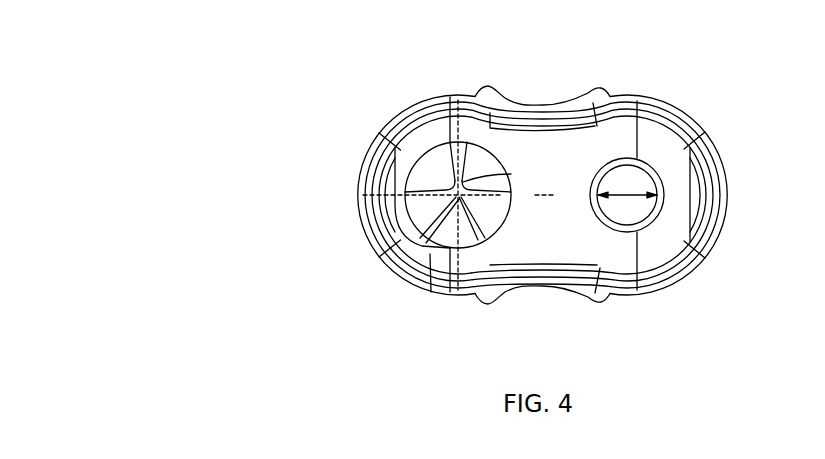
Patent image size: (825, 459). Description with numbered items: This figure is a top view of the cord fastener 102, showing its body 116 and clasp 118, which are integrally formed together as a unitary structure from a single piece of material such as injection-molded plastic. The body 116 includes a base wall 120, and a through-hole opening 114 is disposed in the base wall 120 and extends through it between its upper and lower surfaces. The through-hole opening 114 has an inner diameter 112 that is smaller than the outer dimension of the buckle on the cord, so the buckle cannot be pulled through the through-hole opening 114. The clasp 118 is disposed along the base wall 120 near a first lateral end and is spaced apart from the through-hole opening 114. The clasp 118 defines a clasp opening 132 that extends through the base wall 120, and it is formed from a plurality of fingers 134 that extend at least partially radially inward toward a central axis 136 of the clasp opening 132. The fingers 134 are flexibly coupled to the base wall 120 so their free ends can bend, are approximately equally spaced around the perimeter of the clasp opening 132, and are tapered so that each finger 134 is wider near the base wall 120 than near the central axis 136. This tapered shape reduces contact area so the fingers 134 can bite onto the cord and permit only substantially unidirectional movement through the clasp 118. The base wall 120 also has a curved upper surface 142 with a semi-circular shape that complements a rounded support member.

The cord fastener 102 is at (401, 112).
The inner diameter 112 is at (634, 192).
The through-hole opening 114 is at (628, 166).
The body 116 is at (678, 197).
The clasp 118 is at (479, 160).
The base wall 120 is at (586, 250).
The clasp opening 132 is at (405, 246).
The fingers 134 is at (440, 168).
The central axis 136 is at (500, 238).
The upper surface 142 is at (450, 270).